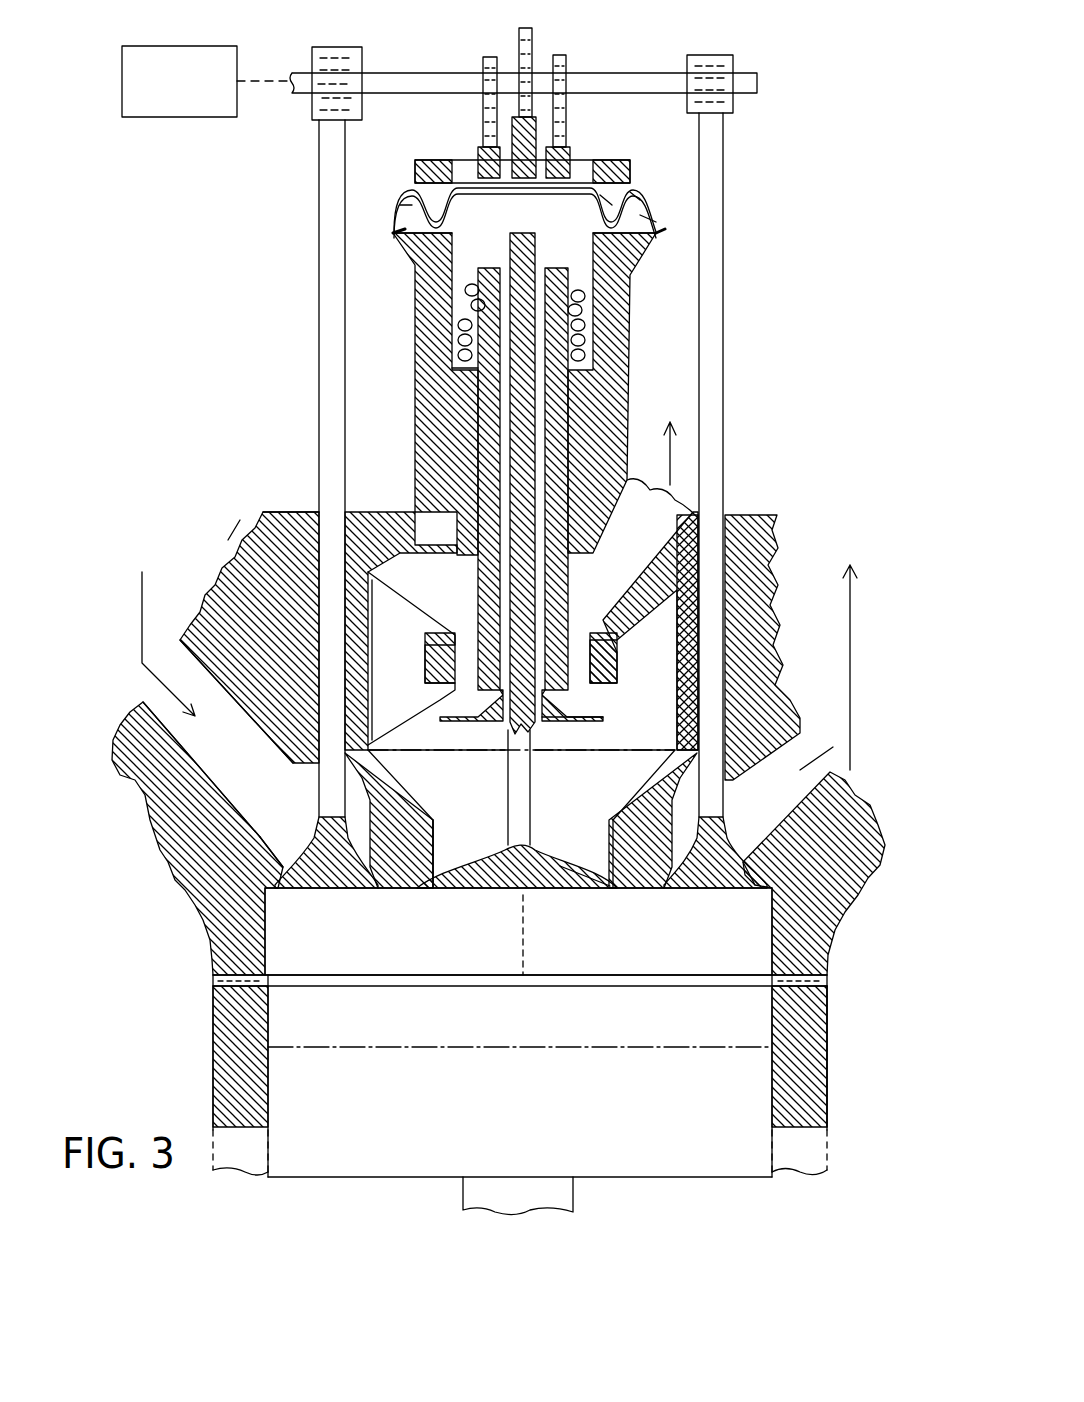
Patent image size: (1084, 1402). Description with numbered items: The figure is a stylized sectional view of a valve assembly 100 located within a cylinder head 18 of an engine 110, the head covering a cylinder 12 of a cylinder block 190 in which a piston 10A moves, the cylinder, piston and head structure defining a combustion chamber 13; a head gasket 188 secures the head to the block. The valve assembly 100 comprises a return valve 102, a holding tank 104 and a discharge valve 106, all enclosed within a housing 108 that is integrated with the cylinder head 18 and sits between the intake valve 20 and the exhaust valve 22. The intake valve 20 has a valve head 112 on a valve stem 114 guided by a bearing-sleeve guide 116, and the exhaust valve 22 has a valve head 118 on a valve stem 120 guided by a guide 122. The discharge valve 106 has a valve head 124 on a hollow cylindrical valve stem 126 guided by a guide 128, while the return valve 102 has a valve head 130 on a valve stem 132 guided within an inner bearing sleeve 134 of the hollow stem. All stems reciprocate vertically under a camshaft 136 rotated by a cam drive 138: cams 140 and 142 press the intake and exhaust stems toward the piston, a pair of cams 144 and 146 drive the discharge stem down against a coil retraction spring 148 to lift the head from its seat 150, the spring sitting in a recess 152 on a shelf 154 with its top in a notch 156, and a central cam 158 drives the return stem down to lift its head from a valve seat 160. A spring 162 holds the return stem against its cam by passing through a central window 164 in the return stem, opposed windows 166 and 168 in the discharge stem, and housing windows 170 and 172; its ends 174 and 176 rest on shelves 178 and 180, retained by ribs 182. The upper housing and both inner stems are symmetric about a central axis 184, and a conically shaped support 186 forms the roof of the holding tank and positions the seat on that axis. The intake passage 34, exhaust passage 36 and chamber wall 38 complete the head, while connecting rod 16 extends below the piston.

The piston 10A is at (372, 1177).
The cylinder 12 is at (213, 1080).
The combustion chamber 13 is at (685, 1024).
The connecting rod 16 is at (573, 1192).
The cylinder head 18 is at (172, 868).
The intake valve 20 is at (358, 902).
The exhaust valve 22 is at (726, 902).
The intake passage 34 is at (148, 690).
The exhaust passage 36 is at (833, 760).
The combustion chamber wall 38 is at (433, 828).
The valve assembly 100 is at (236, 504).
The return valve 102 is at (472, 902).
The holding tank 104 is at (608, 790).
The discharge valve 106 is at (466, 722).
The housing 108 is at (415, 425).
The engine 110 is at (215, 937).
The valve head 112 is at (328, 888).
The valve stem 114 is at (319, 365).
The guide 116 is at (319, 505).
The valve head 118 is at (680, 890).
The valve stem 120 is at (723, 305).
The guide 122 is at (725, 520).
The valve head 124 is at (585, 722).
The valve stem 126 is at (568, 580).
The guide 128 is at (478, 575).
The valve head 130 is at (585, 892).
The valve stem 132 is at (508, 770).
The inner bearing sleeve 134 is at (535, 728).
The camshaft 136 is at (757, 80).
The cam drive 138 is at (152, 118).
The cam 140 is at (312, 100).
The cam 142 is at (733, 108).
The cam 144 is at (483, 62).
The cam 146 is at (566, 60).
The retraction spring 148 is at (458, 330).
The seat 150 is at (605, 686).
The recess 152 is at (583, 296).
The shelf 154 is at (452, 365).
The notch 156 is at (471, 300).
The cam 158 is at (532, 36).
The valve seat 160 is at (600, 890).
The spring 162 is at (645, 210).
The central window 164 is at (465, 290).
The window 166 is at (452, 162).
The window 168 is at (585, 160).
The window 170 is at (418, 192).
The window 172 is at (640, 188).
The end 174 is at (405, 212).
The end 176 is at (652, 222).
The shelf 178 is at (405, 245).
The shelf 180 is at (632, 265).
The ribs 182 is at (400, 232).
The central axis 184 is at (525, 957).
The conically shaped support 186 is at (425, 620).
The head gasket 188 is at (213, 985).
The cylinder block 190 is at (827, 1070).